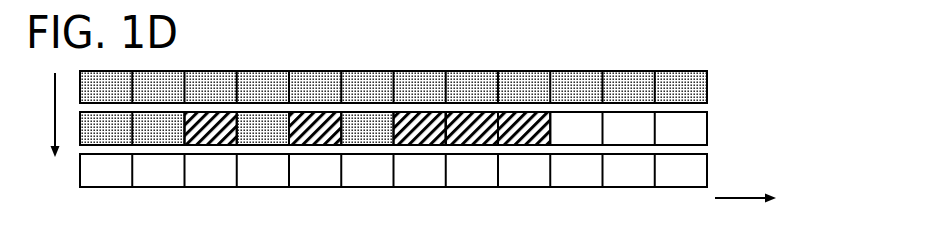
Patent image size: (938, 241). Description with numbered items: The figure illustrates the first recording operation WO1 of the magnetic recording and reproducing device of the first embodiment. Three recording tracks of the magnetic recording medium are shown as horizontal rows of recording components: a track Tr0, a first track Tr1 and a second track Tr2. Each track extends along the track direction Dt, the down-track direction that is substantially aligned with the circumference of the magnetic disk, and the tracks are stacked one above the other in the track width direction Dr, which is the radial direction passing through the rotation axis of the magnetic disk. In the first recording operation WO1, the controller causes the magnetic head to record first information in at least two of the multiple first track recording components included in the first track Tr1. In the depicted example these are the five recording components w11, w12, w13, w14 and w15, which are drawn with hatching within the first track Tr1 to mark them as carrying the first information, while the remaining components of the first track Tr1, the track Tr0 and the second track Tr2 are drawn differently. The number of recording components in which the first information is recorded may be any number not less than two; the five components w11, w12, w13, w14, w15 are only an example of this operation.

The first recording operation WO1 is at (836, 57).
The track Tr0 is at (707, 88).
The first track Tr1 is at (427, 170).
The second track Tr2 is at (707, 172).
The recording component w11 is at (527, 133).
The recording component w12 is at (475, 133).
The recording component w13 is at (425, 133).
The recording component w14 is at (318, 133).
The recording component w15 is at (213, 133).
The track width direction Dr is at (56, 131).
The track direction Dt is at (760, 198).